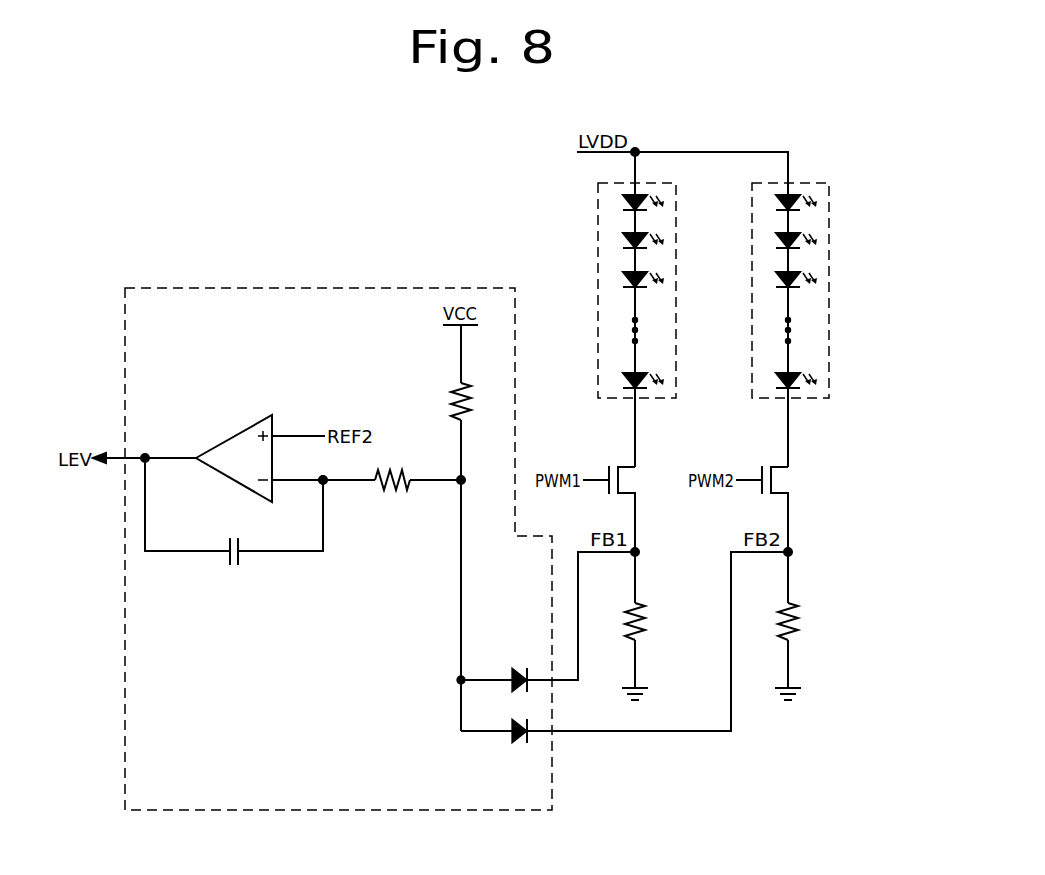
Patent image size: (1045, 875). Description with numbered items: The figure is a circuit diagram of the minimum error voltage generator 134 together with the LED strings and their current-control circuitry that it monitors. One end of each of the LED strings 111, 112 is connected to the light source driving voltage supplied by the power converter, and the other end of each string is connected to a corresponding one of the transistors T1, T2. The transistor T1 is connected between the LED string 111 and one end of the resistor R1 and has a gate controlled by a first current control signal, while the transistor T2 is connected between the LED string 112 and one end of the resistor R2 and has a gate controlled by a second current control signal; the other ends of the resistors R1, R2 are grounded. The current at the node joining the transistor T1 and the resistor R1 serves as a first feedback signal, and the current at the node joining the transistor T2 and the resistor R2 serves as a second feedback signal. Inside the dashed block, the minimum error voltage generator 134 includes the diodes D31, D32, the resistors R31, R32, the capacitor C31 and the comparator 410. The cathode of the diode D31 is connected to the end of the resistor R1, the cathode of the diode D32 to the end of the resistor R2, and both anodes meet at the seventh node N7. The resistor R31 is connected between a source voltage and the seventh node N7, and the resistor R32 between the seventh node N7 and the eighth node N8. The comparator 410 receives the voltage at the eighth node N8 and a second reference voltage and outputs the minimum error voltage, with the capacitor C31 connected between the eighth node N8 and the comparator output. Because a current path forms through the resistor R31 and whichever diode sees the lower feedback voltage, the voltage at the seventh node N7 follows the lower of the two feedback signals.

The minimum error voltage generator 134 is at (325, 288).
The comparator 410 is at (235, 432).
The LED string 111 is at (677, 285).
The LED string 112 is at (830, 284).
The resistor R31 is at (480, 401).
The resistor R32 is at (392, 492).
The capacitor C31 is at (231, 564).
The diode D31 is at (515, 666).
The diode D32 is at (515, 745).
The resistor R1 is at (647, 651).
The resistor R2 is at (800, 651).
The transistor T1 is at (622, 534).
The transistor T2 is at (775, 534).
The seventh node N7 is at (458, 680).
The eighth node N8 is at (326, 484).